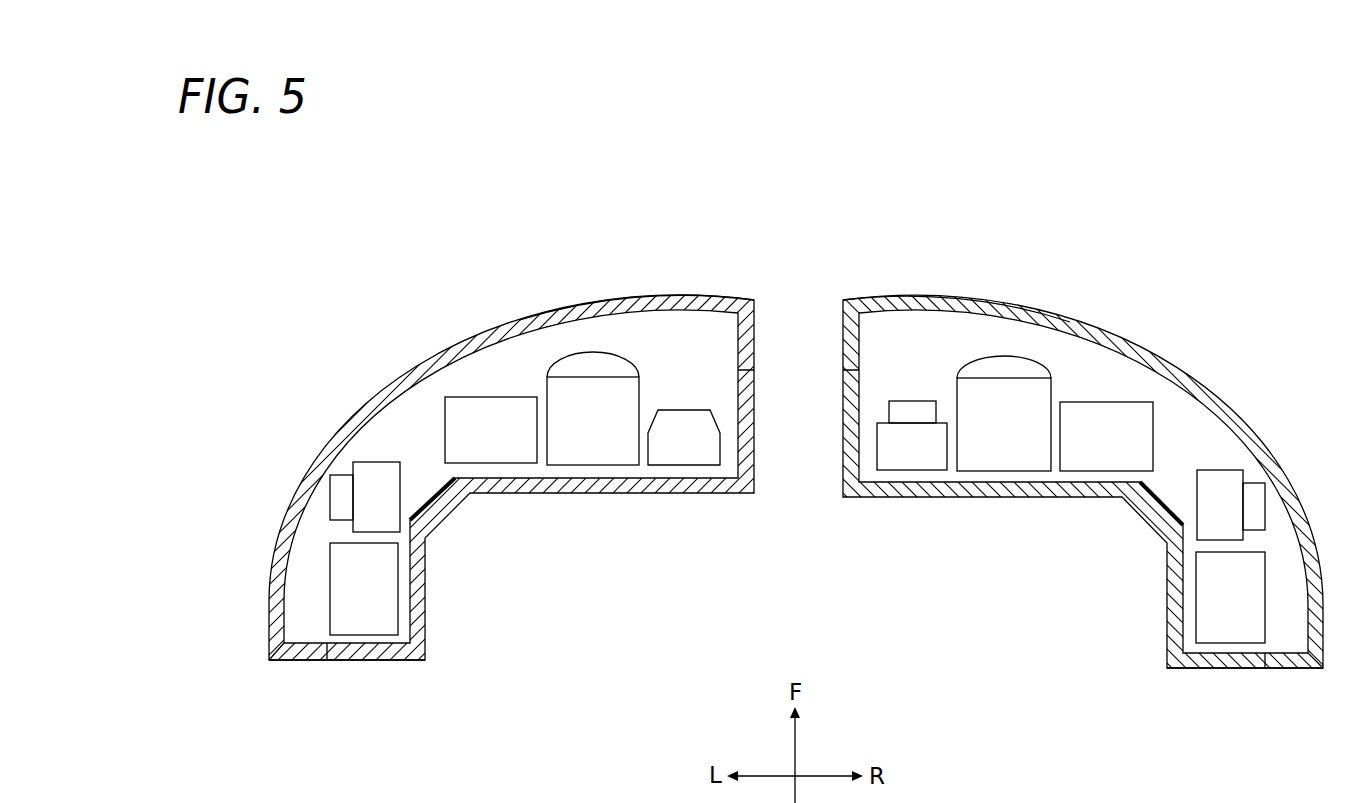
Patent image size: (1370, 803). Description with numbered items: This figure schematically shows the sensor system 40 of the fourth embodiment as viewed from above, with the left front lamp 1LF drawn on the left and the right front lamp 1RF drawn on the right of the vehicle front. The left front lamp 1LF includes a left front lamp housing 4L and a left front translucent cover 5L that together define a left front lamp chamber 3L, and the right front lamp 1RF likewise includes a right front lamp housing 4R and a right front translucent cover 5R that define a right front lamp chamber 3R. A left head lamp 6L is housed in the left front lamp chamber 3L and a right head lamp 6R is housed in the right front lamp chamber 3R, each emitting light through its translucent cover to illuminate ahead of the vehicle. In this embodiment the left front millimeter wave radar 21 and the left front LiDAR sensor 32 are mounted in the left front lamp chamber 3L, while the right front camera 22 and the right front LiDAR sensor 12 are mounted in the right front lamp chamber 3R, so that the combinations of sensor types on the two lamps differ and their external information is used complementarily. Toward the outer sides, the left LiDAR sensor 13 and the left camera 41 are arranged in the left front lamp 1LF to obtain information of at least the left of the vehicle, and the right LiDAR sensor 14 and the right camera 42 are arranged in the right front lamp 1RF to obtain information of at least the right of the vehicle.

The sensor system 40 is at (808, 204).
The left front lamp 1LF is at (438, 289).
The right front lamp 1RF is at (1236, 297).
The left front lamp chamber 3L is at (398, 416).
The right front lamp chamber 3R is at (1200, 430).
The left front translucent cover 5L is at (530, 320).
The right front translucent cover 5R is at (1063, 325).
The left front lamp housing 4L is at (375, 660).
The right front lamp housing 4R is at (1218, 668).
The left front LiDAR sensor 32 is at (513, 463).
The left head lamp 6L is at (592, 465).
The left front millimeter wave radar 21 is at (685, 465).
The left camera 41 is at (392, 498).
The left LiDAR sensor 13 is at (390, 607).
The right front camera 22 is at (910, 470).
The right head lamp 6R is at (1005, 471).
The right front LiDAR sensor 12 is at (1080, 471).
The right camera 42 is at (1203, 505).
The right LiDAR sensor 14 is at (1202, 615).